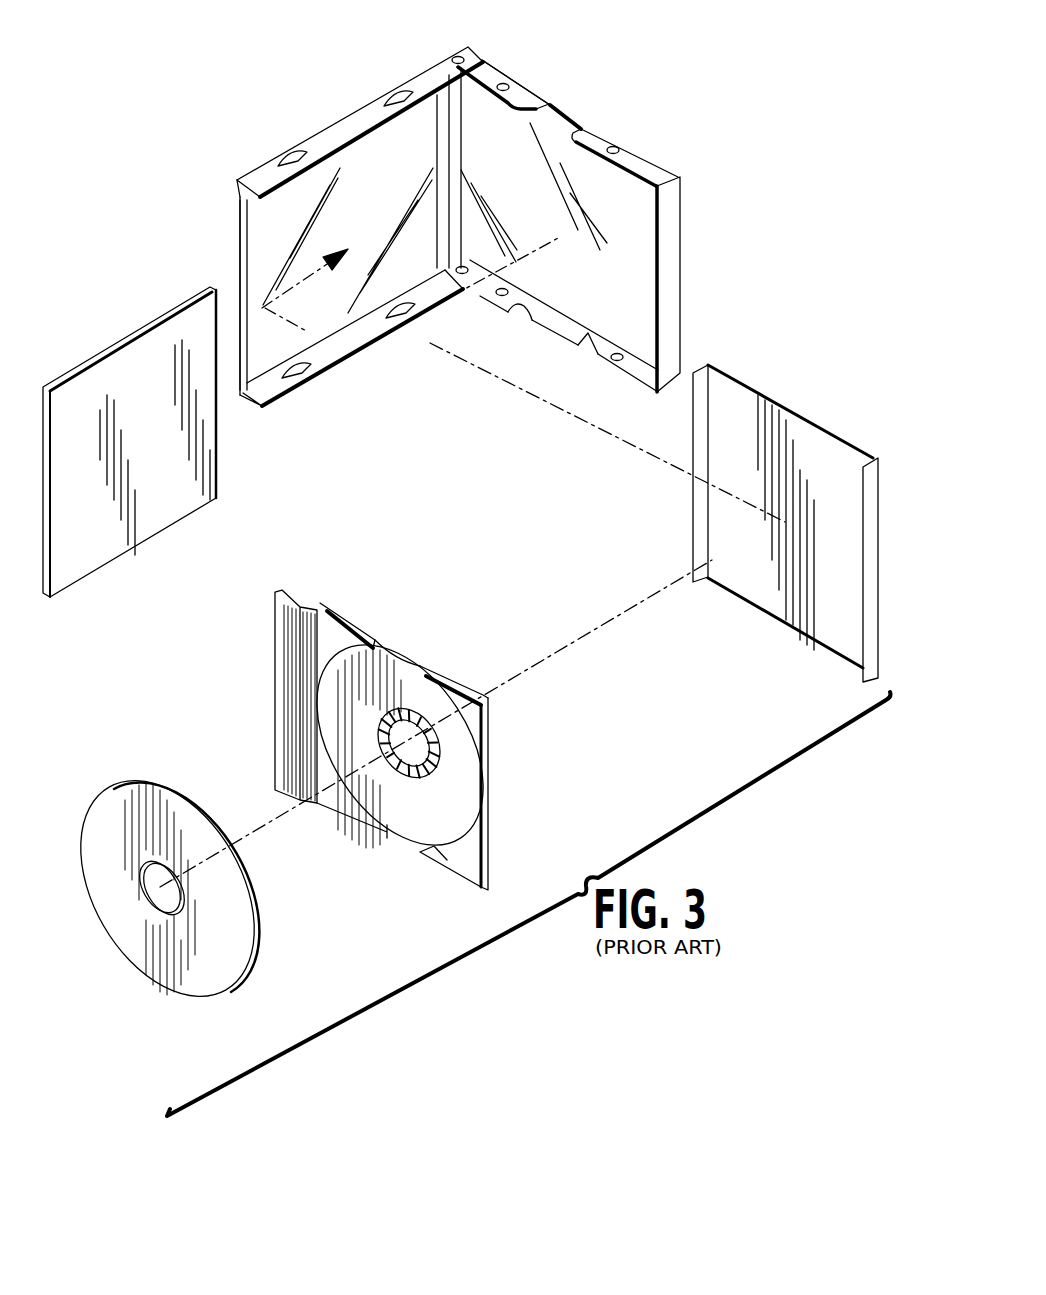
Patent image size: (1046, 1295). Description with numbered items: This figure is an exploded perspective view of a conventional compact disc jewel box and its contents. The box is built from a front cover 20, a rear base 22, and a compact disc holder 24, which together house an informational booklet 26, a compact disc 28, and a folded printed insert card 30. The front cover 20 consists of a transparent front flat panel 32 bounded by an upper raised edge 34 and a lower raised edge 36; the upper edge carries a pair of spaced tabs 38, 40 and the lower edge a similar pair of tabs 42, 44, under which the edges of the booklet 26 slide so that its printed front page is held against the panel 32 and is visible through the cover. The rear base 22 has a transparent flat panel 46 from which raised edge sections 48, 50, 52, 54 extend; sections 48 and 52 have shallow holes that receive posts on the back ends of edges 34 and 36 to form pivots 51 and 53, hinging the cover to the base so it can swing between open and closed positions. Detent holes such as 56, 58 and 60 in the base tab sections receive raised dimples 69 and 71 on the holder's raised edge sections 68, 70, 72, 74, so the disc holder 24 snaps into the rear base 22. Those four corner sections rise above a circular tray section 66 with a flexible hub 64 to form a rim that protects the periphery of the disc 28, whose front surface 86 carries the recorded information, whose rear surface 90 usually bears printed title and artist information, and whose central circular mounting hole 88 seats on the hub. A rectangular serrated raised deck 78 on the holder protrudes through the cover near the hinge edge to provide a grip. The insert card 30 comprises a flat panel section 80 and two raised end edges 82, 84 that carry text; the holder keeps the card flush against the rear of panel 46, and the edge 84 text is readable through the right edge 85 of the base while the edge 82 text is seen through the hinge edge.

The front cover 20 is at (232, 226).
The rear base 22 is at (586, 102).
The compact disc holder 24 is at (387, 622).
The informational booklet 26 is at (160, 500).
The compact disc 28 is at (166, 774).
The folded printed insert card 30 is at (803, 398).
The front flat panel 32 is at (330, 163).
The upper raised edge 34 is at (362, 118).
The lower raised edge 36 is at (355, 340).
The tab 38 is at (292, 162).
The tab 40 is at (397, 97).
The tab 42 is at (302, 380).
The tab 44 is at (407, 316).
The flat panel 46 is at (562, 296).
The raised edge section 48 is at (528, 98).
The raised edge section 50 is at (594, 136).
The pivot 51 is at (458, 56).
The raised edge section 52 is at (521, 313).
The pivot 53 is at (458, 265).
The raised edge section 54 is at (590, 342).
The tab section detent hole 56 is at (505, 82).
The tab section detent hole 58 is at (620, 147).
The tab section detent hole 60 is at (502, 296).
The flexible hub 64 is at (390, 727).
The circular tray section 66 is at (406, 667).
The raised edge section 68 is at (323, 605).
The raised dimple 69 is at (353, 622).
The raised edge section 70 is at (340, 797).
The raised dimple 71 is at (448, 678).
The raised edge section 72 is at (473, 718).
The raised edge section 74 is at (452, 865).
The raised deck 78 is at (280, 650).
The flat panel section 80 is at (745, 403).
The raised end edge 82 is at (697, 400).
The raised end edge 84 is at (872, 497).
The right edge 85 is at (671, 258).
The front surface 86 is at (207, 817).
The central circular mounting hole 88 is at (178, 912).
The rear surface 90 is at (105, 812).